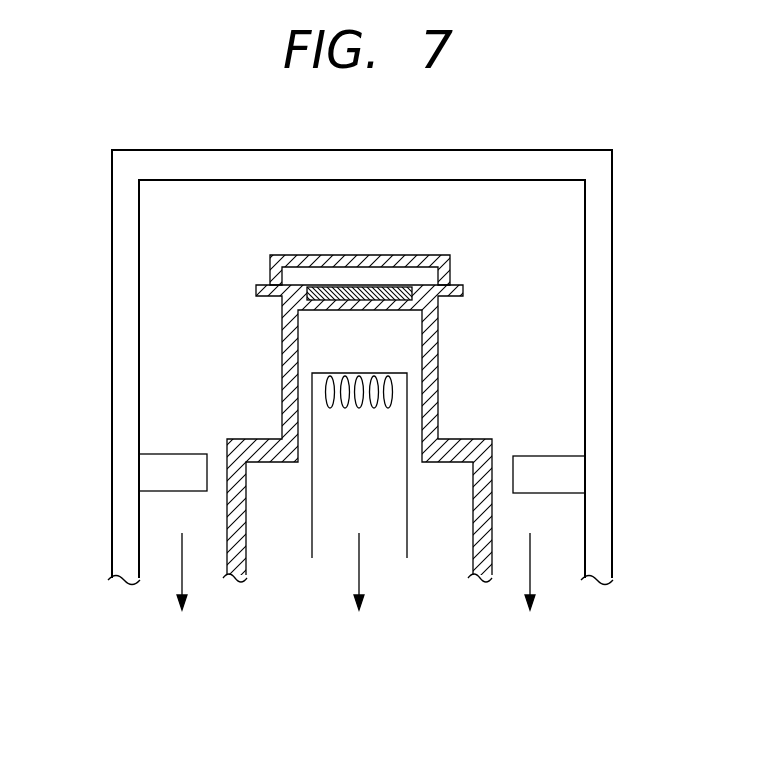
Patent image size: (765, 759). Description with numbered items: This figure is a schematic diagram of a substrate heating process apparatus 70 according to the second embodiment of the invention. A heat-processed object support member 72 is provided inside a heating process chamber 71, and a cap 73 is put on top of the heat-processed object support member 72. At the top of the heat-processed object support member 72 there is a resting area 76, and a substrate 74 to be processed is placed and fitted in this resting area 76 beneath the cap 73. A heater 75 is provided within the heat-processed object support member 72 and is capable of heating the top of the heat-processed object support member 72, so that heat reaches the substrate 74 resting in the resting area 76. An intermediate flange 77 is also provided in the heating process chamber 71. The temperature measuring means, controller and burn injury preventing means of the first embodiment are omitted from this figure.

The heating process apparatus 70 is at (496, 667).
The heating process chamber 71 is at (613, 228).
The heat-processed object support member 72 is at (280, 343).
The cap 73 is at (413, 256).
The substrate 74 is at (325, 290).
The heater 75 is at (312, 418).
The resting area 76 is at (378, 299).
The intermediate flange 77 is at (193, 472).